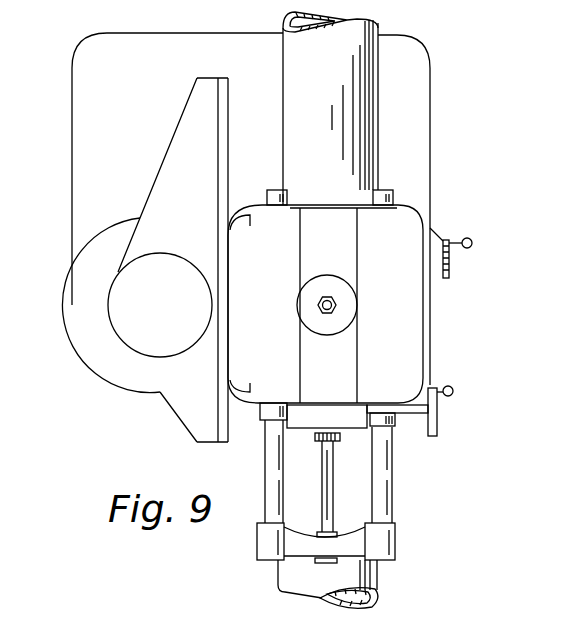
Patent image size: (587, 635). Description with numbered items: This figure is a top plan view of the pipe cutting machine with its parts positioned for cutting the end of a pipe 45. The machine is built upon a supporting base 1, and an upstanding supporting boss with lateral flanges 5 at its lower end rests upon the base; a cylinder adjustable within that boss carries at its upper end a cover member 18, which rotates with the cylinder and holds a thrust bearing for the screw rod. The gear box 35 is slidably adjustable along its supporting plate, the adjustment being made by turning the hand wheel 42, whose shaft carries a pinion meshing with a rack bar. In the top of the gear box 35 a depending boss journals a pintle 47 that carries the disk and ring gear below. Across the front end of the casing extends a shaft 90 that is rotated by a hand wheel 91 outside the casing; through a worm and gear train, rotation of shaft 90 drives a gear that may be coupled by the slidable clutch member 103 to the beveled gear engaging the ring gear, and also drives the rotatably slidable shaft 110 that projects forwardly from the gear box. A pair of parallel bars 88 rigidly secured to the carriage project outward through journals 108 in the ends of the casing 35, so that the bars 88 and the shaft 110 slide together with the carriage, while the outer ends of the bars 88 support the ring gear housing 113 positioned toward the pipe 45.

The supporting base 1 is at (412, 138).
The lateral flanges 5 is at (93, 333).
The cover member 18 is at (155, 342).
The gear box 35 is at (470, 282).
The hand wheel 42 is at (468, 240).
The pintle 47 is at (335, 300).
The parallel bars 88 is at (272, 497).
The shaft 90 is at (386, 420).
The hand wheel 91 is at (455, 388).
The slidable clutch member 103 is at (315, 438).
The journals 108 is at (277, 190).
The rotatably slidable shaft 110 is at (330, 458).
The ring gear housing 113 is at (362, 543).
The pipe 45 is at (350, 578).